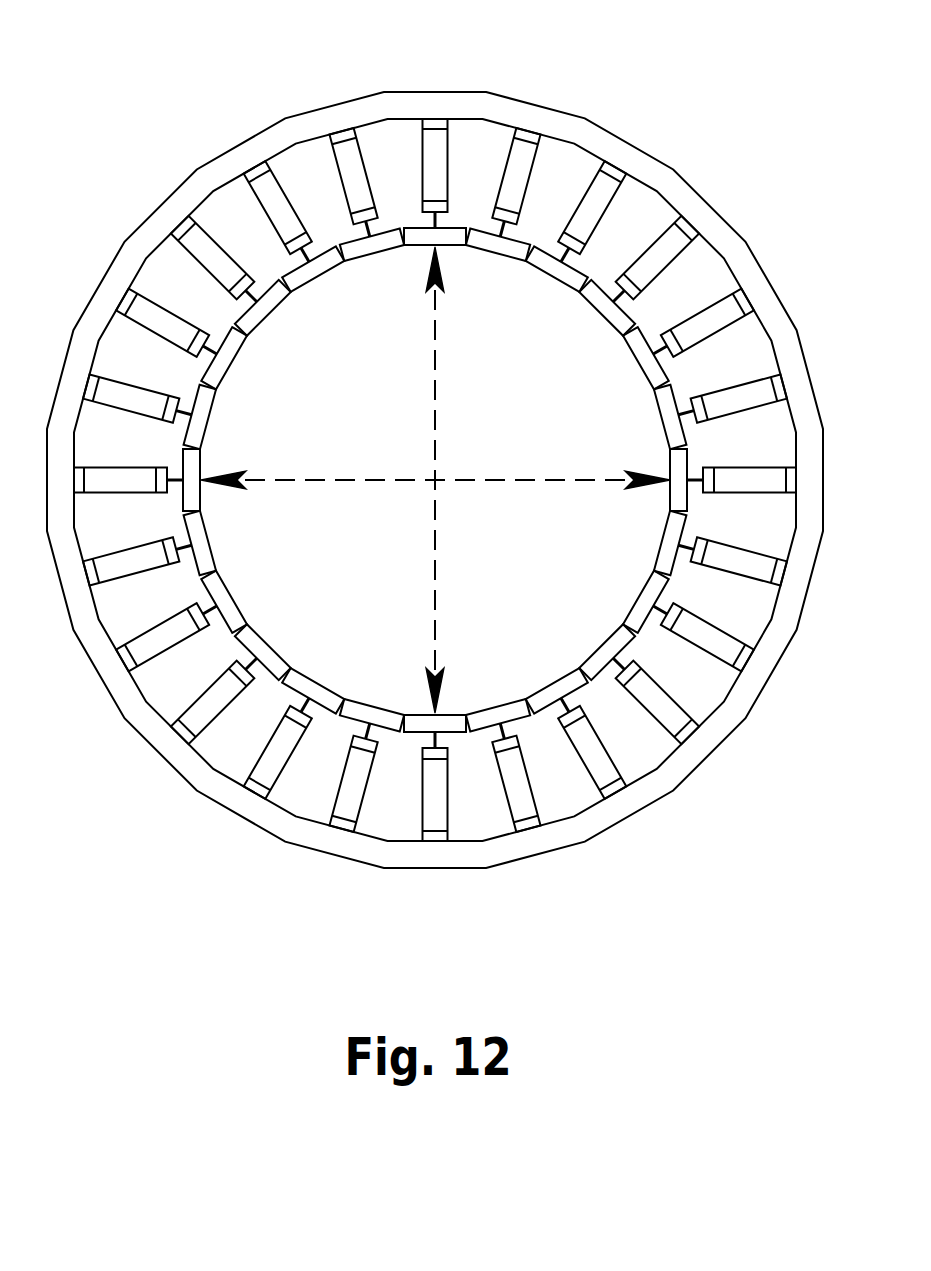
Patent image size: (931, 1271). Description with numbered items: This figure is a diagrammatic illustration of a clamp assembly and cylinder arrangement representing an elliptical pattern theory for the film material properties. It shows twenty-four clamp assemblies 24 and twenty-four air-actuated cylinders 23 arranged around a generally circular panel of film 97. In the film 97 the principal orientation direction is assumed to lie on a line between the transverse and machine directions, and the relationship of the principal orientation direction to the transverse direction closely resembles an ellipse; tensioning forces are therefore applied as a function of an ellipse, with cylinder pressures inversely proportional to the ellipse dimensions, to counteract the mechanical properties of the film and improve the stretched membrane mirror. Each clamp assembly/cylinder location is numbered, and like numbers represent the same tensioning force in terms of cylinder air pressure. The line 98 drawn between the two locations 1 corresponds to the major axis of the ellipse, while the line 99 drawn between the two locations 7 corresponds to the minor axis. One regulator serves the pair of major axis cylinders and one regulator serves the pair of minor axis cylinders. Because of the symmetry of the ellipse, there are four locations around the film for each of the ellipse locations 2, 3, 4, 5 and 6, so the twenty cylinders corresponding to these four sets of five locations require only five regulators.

The major axis clamp location 1 is at (439, 469).
The ellipse location 2 is at (437, 468).
The ellipse location 3 is at (603, 748).
The ellipse location 4 is at (435, 471).
The ellipse location 5 is at (436, 473).
The ellipse location 6 is at (439, 472).
The minor axis clamp location 7 is at (435, 478).
The air-actuated cylinder 23 is at (436, 469).
The clamp assembly 24 is at (320, 280).
The circular panel of film 97 is at (476, 436).
The major axis line 98 is at (435, 573).
The minor axis line 99 is at (335, 480).